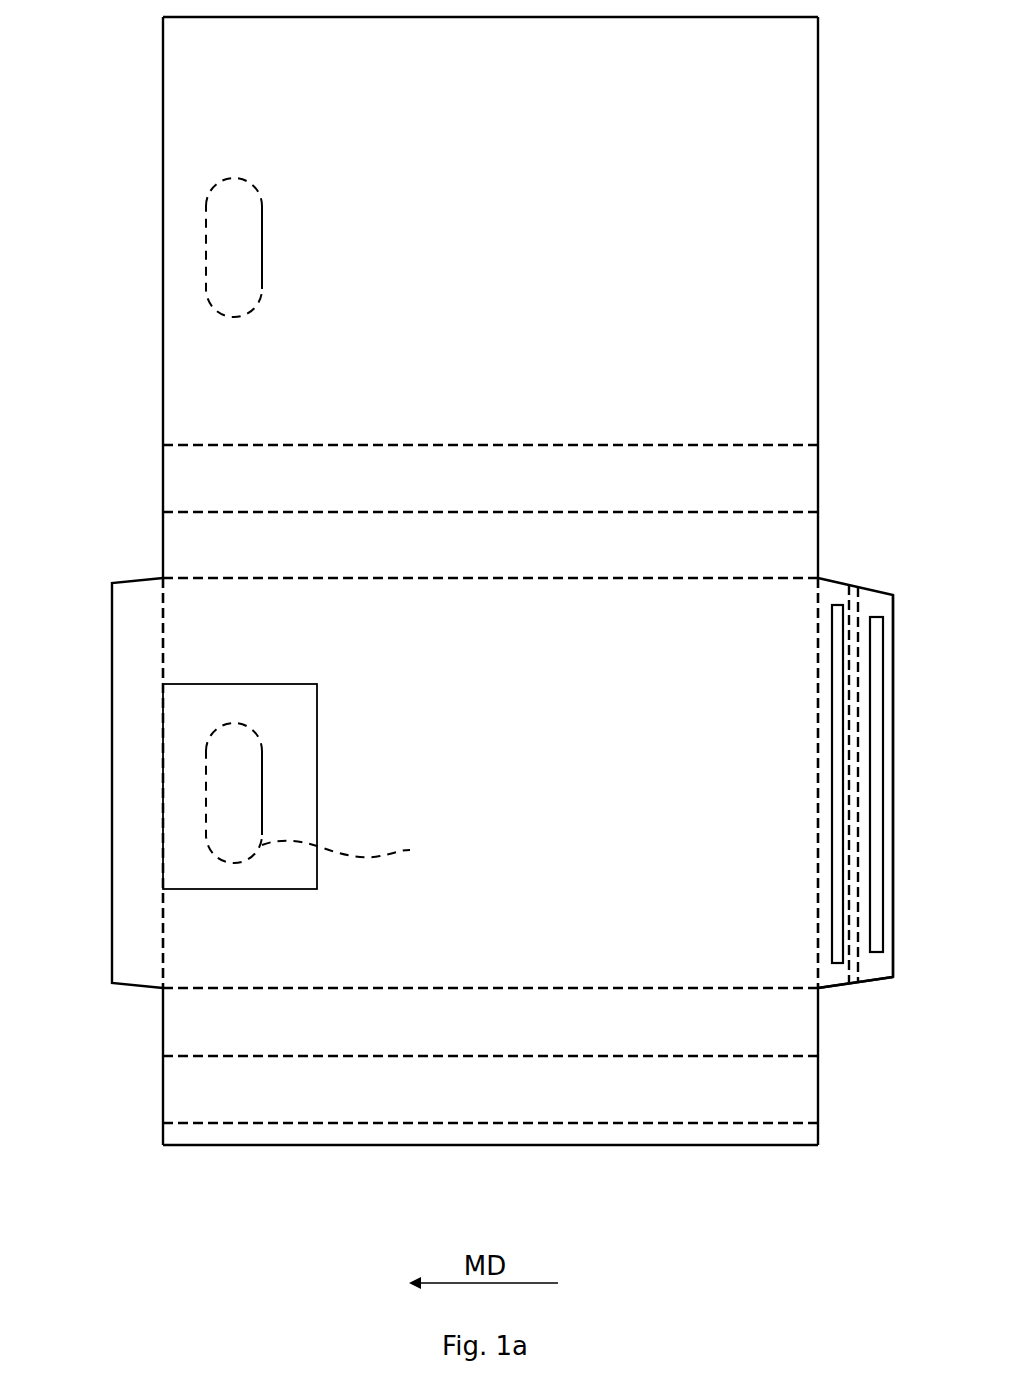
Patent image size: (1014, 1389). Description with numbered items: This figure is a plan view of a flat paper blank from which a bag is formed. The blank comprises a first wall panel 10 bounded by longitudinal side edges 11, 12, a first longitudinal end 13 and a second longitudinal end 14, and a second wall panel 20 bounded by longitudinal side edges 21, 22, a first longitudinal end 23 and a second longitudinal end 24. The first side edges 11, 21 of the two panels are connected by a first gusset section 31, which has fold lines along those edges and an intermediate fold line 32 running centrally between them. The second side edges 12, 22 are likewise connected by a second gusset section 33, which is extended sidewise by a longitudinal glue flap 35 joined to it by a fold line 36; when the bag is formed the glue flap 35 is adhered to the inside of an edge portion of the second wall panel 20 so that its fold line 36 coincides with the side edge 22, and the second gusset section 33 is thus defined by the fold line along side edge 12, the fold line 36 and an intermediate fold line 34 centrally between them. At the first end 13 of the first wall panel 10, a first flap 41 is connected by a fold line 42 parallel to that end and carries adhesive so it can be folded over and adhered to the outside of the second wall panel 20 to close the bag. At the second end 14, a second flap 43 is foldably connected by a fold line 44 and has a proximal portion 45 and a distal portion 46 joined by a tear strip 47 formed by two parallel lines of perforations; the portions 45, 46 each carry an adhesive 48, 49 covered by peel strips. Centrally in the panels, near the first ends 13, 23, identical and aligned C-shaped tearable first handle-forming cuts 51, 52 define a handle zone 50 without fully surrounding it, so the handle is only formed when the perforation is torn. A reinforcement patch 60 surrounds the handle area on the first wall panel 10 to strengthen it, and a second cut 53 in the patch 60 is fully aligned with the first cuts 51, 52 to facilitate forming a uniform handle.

The first wall panel 10 is at (507, 806).
The longitudinal side edge 11 is at (385, 578).
The longitudinal side edge 12 is at (373, 988).
The first longitudinal end 13 is at (160, 597).
The second longitudinal end 14 is at (818, 643).
The second wall panel 20 is at (470, 354).
The longitudinal side edge 21 is at (515, 445).
The longitudinal side edge 22 is at (497, 19).
The first longitudinal end 23 is at (163, 110).
The second longitudinal end 24 is at (818, 140).
The first gusset section 31 is at (140, 440).
The fold line of connecting strip 32 is at (378, 512).
The second gusset section 33 is at (140, 1090).
The intermediate fold line 34 is at (298, 1056).
The glue flap 35 is at (240, 1133).
The fold line 36 is at (342, 1123).
The first flap 41 is at (112, 835).
The fold line 42 is at (163, 935).
The second flap 43 is at (864, 988).
The fold line 44 is at (818, 896).
The proximal portion 45 is at (825, 990).
The distal portion 46 is at (878, 980).
The tear strip 47 is at (856, 590).
The adhesive 48 is at (833, 605).
The adhesive 49 is at (883, 617).
The handle zone 50 is at (232, 232).
The first handle-forming cut 51 is at (346, 839).
The first handle-forming cut 52 is at (262, 287).
The second cut 53 is at (262, 782).
The reinforcement patch 60 is at (317, 889).